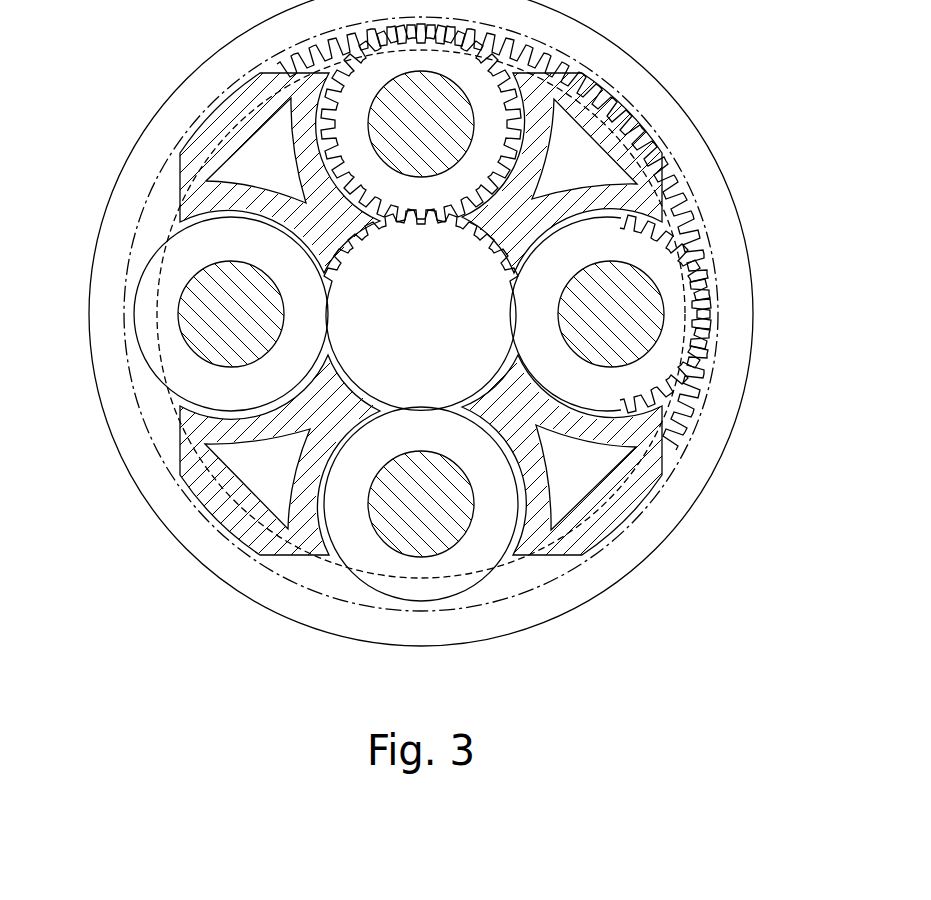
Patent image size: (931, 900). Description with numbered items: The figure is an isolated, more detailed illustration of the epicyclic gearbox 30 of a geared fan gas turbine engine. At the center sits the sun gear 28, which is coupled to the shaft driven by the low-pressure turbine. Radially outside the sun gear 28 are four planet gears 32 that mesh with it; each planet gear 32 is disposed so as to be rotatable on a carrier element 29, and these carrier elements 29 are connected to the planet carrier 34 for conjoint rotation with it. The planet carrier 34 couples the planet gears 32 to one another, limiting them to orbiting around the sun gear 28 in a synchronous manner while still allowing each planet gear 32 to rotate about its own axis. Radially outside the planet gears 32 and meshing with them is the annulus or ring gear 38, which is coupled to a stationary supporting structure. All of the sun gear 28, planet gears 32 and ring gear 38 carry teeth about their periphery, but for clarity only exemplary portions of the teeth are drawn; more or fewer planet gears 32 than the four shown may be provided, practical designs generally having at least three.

The sun gear 28 is at (438, 326).
The carrier element 29 is at (210, 323).
The epicyclic gearbox assembly 30 is at (180, 83).
The planet gear 32 is at (614, 253).
The planet carrier 34 is at (581, 440).
The ring gear 38 is at (751, 278).